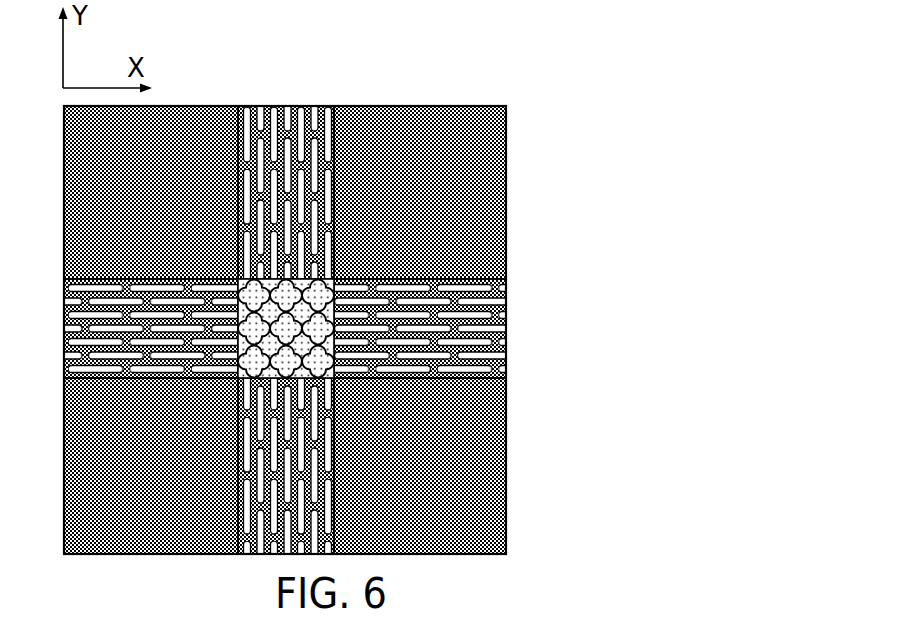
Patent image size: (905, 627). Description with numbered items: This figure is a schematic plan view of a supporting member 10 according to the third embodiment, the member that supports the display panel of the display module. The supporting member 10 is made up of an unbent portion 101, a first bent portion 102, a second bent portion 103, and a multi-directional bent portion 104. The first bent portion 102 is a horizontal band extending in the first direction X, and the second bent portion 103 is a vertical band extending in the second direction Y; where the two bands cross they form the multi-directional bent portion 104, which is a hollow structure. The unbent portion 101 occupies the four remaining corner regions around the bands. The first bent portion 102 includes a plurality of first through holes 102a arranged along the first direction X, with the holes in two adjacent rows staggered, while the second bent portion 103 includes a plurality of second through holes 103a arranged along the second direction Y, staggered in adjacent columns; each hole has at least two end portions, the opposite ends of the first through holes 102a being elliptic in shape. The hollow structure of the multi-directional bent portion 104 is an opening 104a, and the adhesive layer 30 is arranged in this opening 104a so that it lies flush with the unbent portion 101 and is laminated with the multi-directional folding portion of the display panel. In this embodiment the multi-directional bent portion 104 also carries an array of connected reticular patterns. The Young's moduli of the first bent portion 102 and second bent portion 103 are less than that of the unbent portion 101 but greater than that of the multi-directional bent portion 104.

The supporting member 10 is at (331, 295).
The unbent portion 101 is at (183, 105).
The first bent portion 102 is at (327, 318).
The first through holes 102a is at (484, 338).
The second bent portion 103 is at (310, 305).
The second through holes 103a is at (360, 78).
The multi-directional bent portion 104 is at (418, 296).
The opening 104a is at (335, 378).
The adhesive layer 30 is at (335, 308).